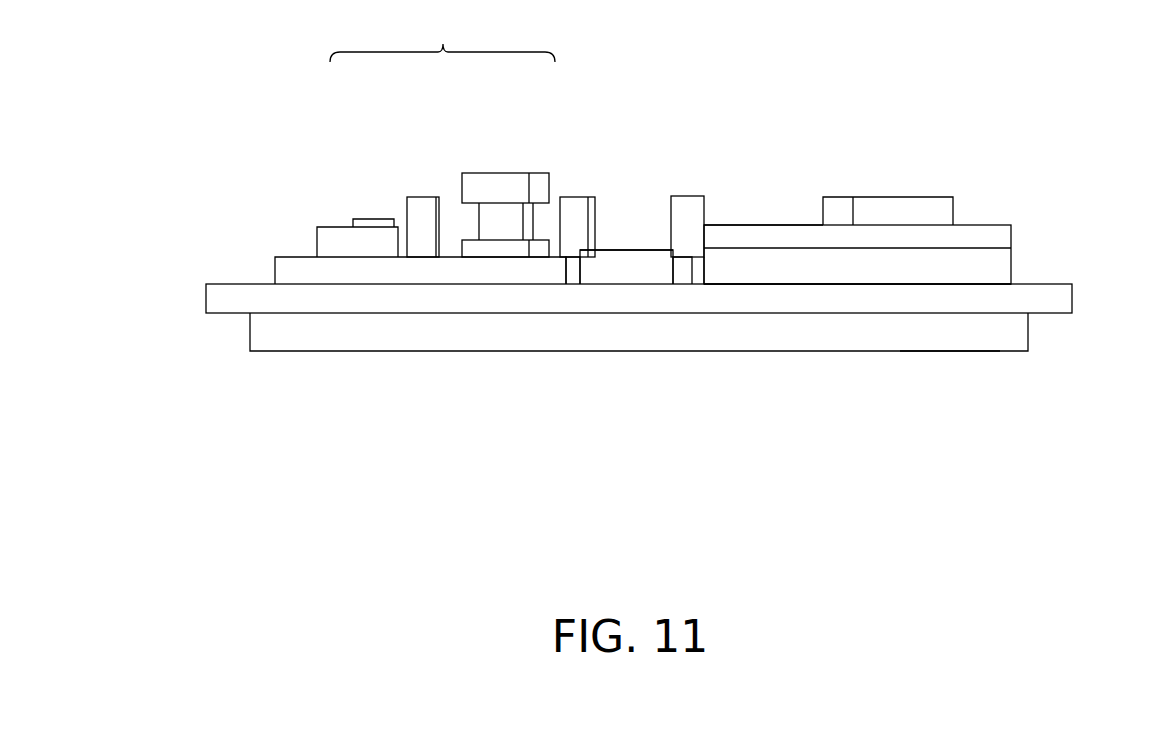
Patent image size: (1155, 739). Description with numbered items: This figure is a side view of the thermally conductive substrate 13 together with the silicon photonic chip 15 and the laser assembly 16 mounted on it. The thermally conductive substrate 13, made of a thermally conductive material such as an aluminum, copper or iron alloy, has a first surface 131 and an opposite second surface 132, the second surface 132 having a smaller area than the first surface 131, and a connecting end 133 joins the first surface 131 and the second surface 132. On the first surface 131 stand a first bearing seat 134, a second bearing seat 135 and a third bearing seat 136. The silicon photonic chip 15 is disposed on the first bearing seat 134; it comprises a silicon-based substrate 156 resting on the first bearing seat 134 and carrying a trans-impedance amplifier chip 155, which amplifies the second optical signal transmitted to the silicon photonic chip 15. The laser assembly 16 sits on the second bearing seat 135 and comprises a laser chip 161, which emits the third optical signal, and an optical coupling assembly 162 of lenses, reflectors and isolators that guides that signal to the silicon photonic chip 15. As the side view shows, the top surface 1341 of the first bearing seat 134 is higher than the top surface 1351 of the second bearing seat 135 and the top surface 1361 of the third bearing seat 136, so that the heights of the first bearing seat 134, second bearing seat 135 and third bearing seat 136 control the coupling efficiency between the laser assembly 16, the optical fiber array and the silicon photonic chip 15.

The thermally conductive substrate 13 is at (1050, 297).
The first surface 131 is at (1042, 277).
The second surface 132 is at (939, 358).
The connecting end 133 is at (1028, 328).
The first bearing seat 134 is at (780, 258).
The top surface of the first bearing seat 1341 is at (960, 237).
The second bearing seat 135 is at (373, 272).
The top surface of the second bearing seat 1351 is at (290, 243).
The third bearing seat 136 is at (630, 272).
The top surface of the third bearing seat 1361 is at (631, 242).
The silicon photonic chip 15 is at (832, 106).
The trans-impedance amplifier chip 155 is at (902, 204).
The silicon-based substrate 156 is at (742, 230).
The laser assembly 16 is at (507, 133).
The laser chip 161 is at (375, 215).
The optical coupling assembly 162 is at (682, 177).